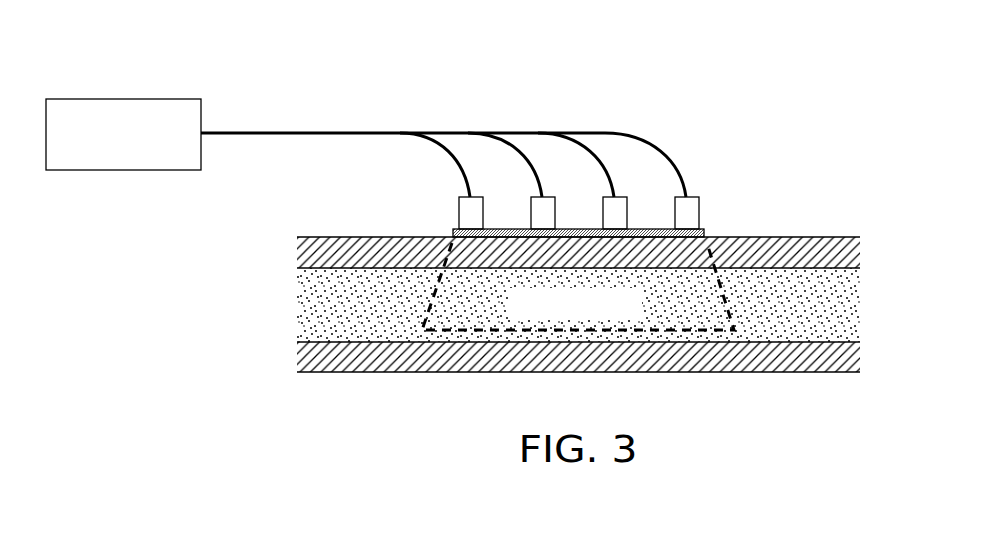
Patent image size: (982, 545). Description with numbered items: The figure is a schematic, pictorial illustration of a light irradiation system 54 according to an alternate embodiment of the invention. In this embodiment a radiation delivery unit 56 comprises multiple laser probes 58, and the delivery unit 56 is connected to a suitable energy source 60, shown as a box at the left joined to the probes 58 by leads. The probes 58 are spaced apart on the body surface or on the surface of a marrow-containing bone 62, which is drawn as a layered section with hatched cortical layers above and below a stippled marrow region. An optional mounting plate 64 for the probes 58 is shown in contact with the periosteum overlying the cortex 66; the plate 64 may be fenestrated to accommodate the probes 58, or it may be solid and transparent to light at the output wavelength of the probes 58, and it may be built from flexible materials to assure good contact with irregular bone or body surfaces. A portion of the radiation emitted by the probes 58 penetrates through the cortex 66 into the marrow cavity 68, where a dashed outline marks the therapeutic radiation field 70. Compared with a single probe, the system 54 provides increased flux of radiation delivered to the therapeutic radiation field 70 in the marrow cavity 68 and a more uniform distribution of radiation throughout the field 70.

The light irradiation system 54 is at (331, 84).
The radiation delivery unit 56 is at (700, 128).
The laser probes 58 is at (459, 216).
The energy source 60 is at (112, 170).
The marrow-containing bone 62 is at (295, 369).
The mounting plate 64 is at (704, 233).
The cortex 66 is at (328, 238).
The marrow cavity 68 is at (703, 287).
The therapeutic radiation field 70 is at (430, 297).